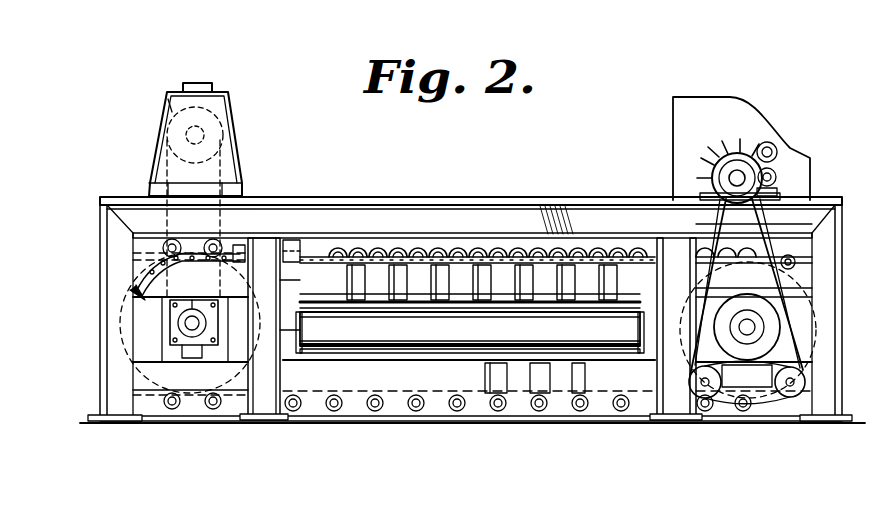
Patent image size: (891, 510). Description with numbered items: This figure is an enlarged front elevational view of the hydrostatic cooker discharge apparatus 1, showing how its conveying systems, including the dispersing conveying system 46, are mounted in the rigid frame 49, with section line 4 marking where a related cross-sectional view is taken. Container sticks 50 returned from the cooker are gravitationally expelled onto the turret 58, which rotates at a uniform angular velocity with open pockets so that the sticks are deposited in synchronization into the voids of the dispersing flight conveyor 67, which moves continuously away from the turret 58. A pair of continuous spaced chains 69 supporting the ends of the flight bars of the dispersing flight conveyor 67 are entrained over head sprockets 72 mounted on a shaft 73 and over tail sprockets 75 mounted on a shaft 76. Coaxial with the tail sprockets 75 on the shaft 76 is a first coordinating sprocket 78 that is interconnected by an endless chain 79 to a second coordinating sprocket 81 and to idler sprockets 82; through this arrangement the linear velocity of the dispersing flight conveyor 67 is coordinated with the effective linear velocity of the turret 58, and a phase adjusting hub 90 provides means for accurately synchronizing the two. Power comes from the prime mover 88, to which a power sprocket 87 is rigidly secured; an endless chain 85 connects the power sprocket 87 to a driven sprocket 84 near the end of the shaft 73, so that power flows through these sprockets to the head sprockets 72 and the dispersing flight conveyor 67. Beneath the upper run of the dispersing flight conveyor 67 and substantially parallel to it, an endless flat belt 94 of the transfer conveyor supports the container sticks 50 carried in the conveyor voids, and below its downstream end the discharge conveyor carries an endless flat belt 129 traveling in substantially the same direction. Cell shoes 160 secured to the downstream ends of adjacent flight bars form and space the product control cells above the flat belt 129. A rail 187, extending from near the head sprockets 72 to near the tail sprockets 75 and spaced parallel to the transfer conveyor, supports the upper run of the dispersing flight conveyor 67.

The cooker discharge apparatus 1 is at (604, 124).
The section line 4- 4 is at (520, 185).
The dispersing conveying system 46 is at (552, 182).
The frame 49 is at (830, 270).
The container sticks 50 is at (404, 240).
The turret 58 is at (714, 150).
The dispersing flight conveyor 67 is at (722, 398).
The chains 69 is at (520, 256).
The head sprockets 72 is at (142, 285).
The shaft 73 is at (192, 300).
The tail sprockets 75 is at (815, 348).
The shaft 76 is at (750, 320).
The first coordinating sprocket 78 is at (762, 370).
The endless chain 79 is at (772, 224).
The second coordinating sprocket 81 is at (737, 146).
The idler sprockets 82 is at (697, 380).
The driven sprocket 84 is at (208, 352).
The endless chain 85 is at (226, 222).
The power sprocket 87 is at (231, 123).
The prime mover 88 is at (168, 102).
The phase adjusting hub 90 is at (712, 178).
The flat belt 94 is at (290, 277).
The flat belt 129 is at (382, 350).
The cell shoes 160 is at (458, 260).
The rail 187 is at (297, 244).